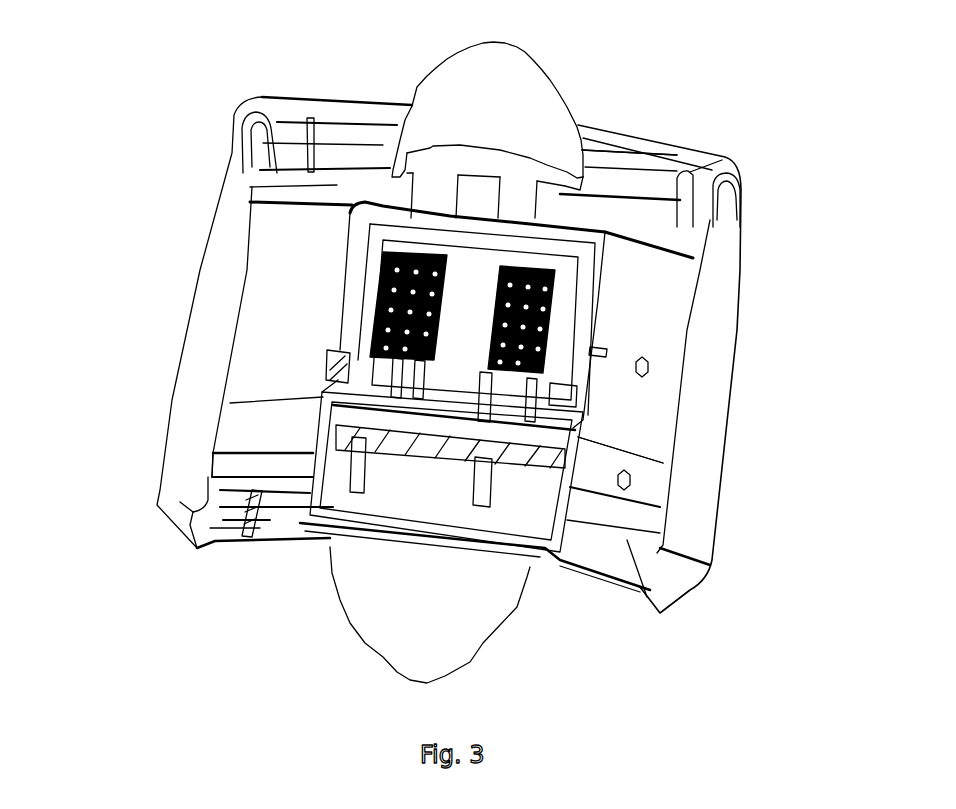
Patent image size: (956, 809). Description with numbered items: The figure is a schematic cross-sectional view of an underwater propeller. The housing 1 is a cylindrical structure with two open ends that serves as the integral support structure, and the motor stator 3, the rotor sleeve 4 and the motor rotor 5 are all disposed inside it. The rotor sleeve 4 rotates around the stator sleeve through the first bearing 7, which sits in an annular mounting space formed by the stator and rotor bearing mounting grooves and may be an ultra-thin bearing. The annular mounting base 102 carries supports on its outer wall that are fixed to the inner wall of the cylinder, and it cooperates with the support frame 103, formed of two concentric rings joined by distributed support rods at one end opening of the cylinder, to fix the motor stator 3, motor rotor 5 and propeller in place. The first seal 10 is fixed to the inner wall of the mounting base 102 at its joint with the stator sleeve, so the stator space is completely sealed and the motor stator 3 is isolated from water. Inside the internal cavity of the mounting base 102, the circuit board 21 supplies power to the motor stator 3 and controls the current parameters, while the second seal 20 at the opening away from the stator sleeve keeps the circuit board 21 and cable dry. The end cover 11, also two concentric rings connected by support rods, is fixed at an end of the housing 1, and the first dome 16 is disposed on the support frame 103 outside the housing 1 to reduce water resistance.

The housing 1 is at (710, 395).
The motor stator 3 is at (547, 315).
The rotor sleeve 4 is at (363, 247).
The motor rotor 5 is at (362, 297).
The first bearing 7 is at (347, 365).
The first seal 10 is at (437, 403).
The end cover 11 is at (183, 528).
The first dome 16 is at (452, 92).
The second seal 20 is at (485, 535).
The circuit board 21 is at (445, 442).
The mounting base 102 is at (573, 452).
The support frame 103 is at (670, 148).